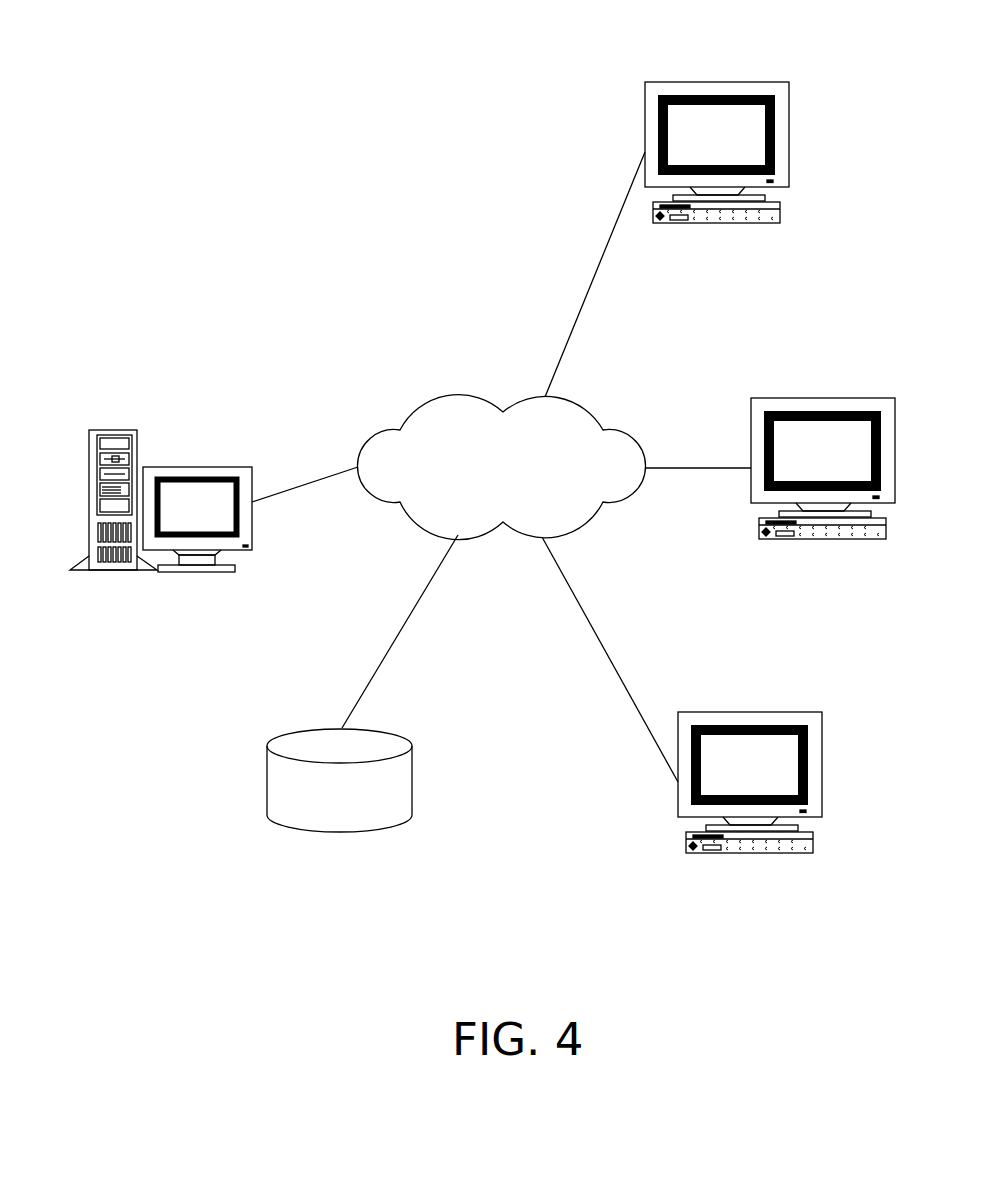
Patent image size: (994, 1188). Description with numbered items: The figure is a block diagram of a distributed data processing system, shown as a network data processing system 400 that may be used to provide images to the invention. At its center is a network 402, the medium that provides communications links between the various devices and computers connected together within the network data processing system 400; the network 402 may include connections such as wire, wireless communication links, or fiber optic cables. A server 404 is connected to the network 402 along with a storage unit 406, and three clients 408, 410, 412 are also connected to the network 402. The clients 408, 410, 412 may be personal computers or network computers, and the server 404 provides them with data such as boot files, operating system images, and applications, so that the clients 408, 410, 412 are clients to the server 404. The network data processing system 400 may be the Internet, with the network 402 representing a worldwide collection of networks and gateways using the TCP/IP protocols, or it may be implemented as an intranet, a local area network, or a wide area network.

The network data processing system 400 is at (517, 786).
The network 402 is at (460, 397).
The server 404 is at (162, 470).
The storage unit 406 is at (320, 823).
The client 408 is at (655, 92).
The client 410 is at (762, 407).
The client 412 is at (813, 720).